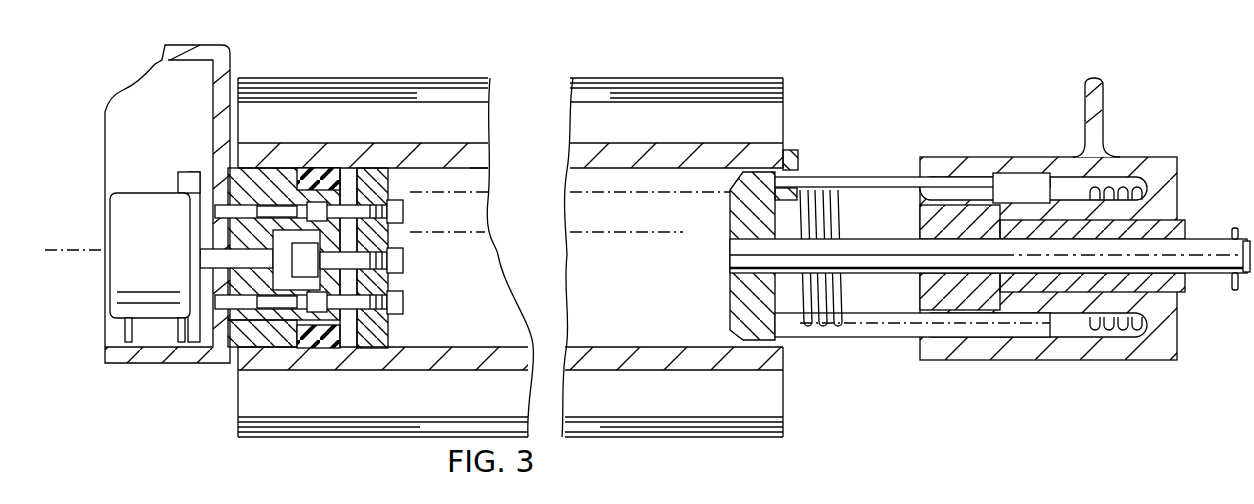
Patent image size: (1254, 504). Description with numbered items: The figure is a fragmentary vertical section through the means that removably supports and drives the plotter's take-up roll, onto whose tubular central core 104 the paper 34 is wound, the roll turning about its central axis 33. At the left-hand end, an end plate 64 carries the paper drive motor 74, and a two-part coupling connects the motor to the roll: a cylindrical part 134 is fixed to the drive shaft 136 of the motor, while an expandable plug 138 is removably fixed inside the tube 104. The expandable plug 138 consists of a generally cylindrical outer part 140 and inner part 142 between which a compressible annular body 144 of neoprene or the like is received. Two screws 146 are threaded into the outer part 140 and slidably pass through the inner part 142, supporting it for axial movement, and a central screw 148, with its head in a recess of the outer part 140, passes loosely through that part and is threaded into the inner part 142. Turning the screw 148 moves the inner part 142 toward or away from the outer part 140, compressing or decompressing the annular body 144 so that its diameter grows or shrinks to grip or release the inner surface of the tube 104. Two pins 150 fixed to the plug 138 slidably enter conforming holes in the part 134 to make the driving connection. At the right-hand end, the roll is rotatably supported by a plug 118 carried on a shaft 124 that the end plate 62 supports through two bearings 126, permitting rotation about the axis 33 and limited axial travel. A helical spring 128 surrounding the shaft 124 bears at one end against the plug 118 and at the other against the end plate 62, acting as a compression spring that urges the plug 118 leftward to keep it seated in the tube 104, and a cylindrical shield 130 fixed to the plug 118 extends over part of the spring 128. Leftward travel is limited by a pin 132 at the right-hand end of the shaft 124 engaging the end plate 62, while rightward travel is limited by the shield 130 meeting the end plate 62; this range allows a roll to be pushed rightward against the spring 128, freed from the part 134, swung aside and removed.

The central axis 33 is at (60, 240).
The paper 34 is at (415, 79).
The end plate 62 is at (1137, 157).
The end plate 64 is at (208, 48).
The paper drive motor 74 is at (162, 192).
The tubular central core 104 is at (472, 172).
The plug 118 is at (798, 167).
The shaft 124 is at (747, 250).
The bearings 126 is at (915, 227).
The helical spring 128 is at (832, 308).
The cylindrical shield 130 is at (887, 176).
The pin 132 is at (1233, 283).
The cylindrical part 134 is at (220, 233).
The drive shaft 136 is at (207, 260).
The expandable plug 138 is at (250, 167).
The outer part 140 is at (262, 337).
The inner part 142 is at (377, 188).
The compressible annular body 144 is at (343, 170).
The screws 146 is at (403, 216).
The screw 148 is at (405, 259).
The pins 150 is at (283, 208).